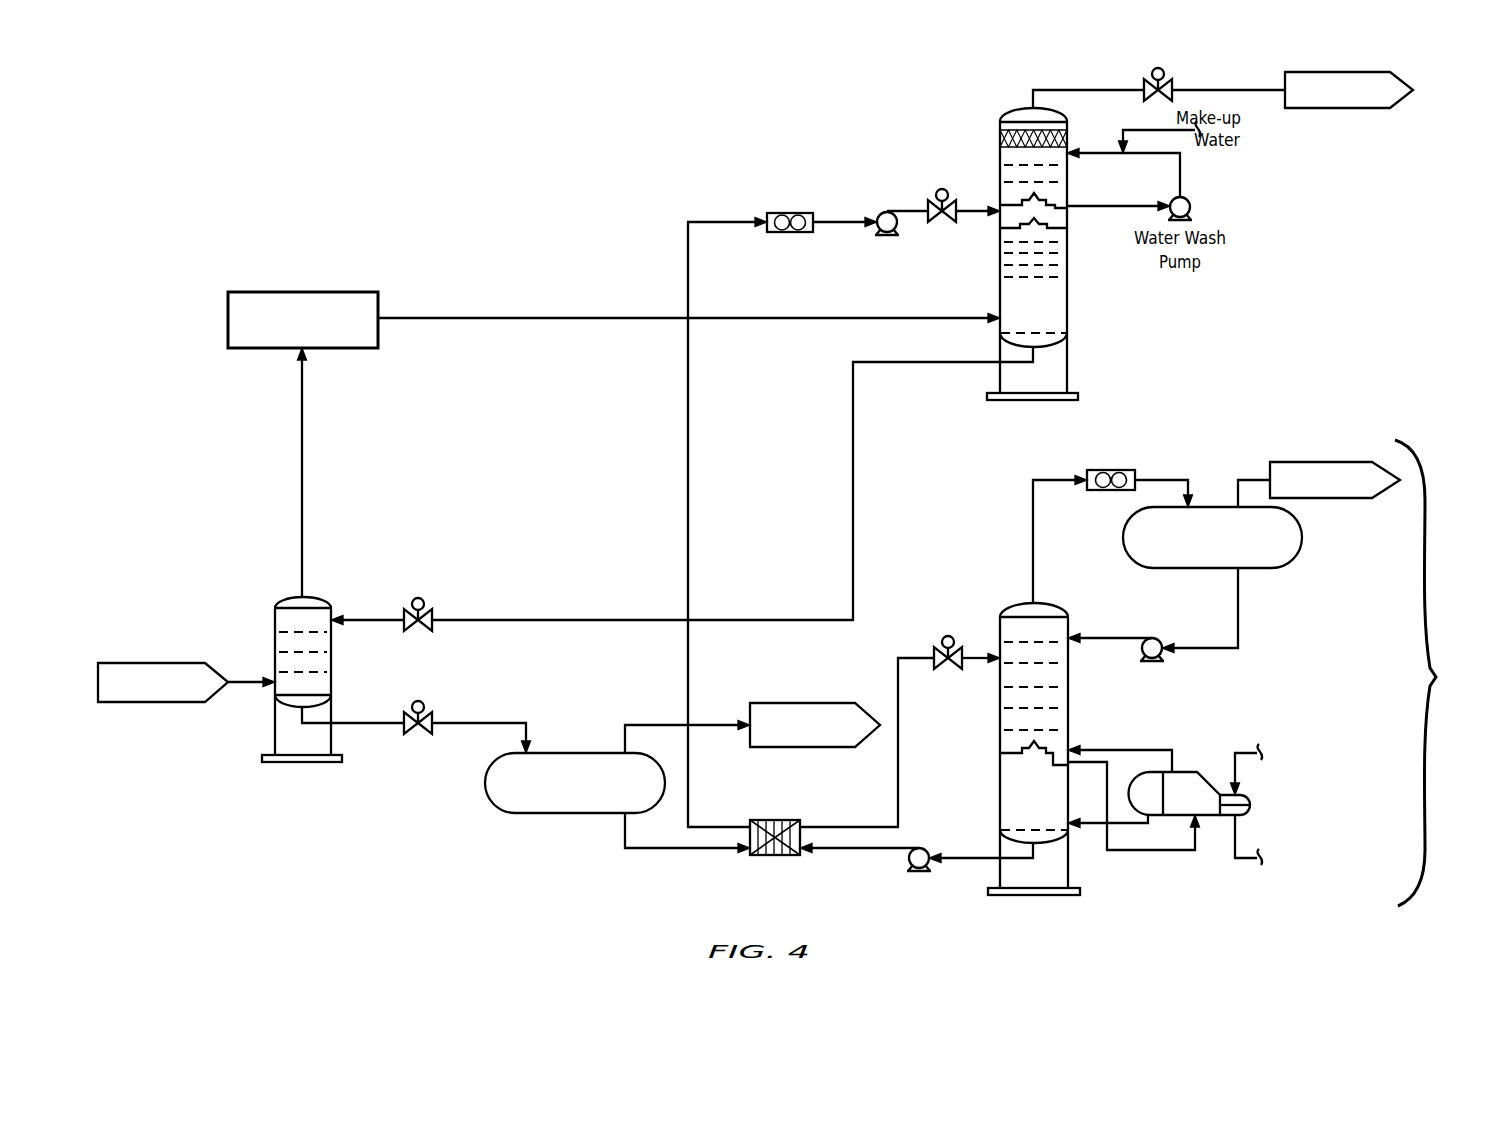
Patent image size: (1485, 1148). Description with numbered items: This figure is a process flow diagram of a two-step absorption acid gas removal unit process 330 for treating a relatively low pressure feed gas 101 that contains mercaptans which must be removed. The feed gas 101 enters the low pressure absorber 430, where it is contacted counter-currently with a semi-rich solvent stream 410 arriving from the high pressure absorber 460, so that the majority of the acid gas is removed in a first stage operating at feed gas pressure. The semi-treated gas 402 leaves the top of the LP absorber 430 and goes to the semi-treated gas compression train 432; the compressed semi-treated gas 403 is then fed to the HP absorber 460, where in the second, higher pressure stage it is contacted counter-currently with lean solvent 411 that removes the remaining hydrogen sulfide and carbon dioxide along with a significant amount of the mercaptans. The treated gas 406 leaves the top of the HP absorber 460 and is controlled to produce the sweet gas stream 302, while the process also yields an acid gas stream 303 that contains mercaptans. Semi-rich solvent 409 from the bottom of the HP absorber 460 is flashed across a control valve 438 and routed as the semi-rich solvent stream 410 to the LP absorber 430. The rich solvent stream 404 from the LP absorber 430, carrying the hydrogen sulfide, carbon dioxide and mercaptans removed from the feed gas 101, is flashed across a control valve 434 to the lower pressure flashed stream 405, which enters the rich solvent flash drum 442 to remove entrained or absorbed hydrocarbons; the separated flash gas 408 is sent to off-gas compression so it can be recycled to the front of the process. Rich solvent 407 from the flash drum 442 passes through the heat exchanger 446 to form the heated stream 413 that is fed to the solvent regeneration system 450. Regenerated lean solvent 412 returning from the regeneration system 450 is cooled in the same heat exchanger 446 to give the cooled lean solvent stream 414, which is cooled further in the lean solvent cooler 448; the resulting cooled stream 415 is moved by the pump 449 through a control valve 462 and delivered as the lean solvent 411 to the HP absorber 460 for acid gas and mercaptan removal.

The feed gas 101 is at (243, 684).
The sweet gas stream 302 is at (1232, 88).
The acid gas stream 303 is at (1254, 480).
The acid gas removal unit 330 is at (470, 205).
The semi-treated gas 402 is at (302, 467).
The compressed semi-treated gas 403 is at (802, 319).
The rich solvent stream 404 is at (368, 723).
The flashed stream 405 is at (476, 723).
The treated gas 406 is at (1086, 90).
The rich solvent 407 is at (645, 850).
The flash gas 408 is at (655, 724).
The semi-rich solvent 409 is at (853, 485).
The semi-rich solvent stream 410 is at (369, 620).
The lean solvent 411 is at (966, 211).
The regenerated lean solvent stream 412 is at (883, 848).
The heated stream 413 is at (899, 738).
The cooled lean solvent stream 414 is at (688, 463).
The cooled stream 415 is at (830, 223).
The LP Absorber 430 is at (283, 598).
The Semi-Treated Gas Compression Train 432 is at (352, 348).
The control valve 434 is at (425, 737).
The control valve 438 is at (421, 597).
The Rich Solvent Flash Drum 442 is at (485, 800).
The heat exchanger 446 is at (784, 820).
The Lean Solvent Cooler 448 is at (775, 233).
The pump 449 is at (877, 211).
The solvent regeneration system 450 is at (1136, 671).
The HP Absorber 460 is at (1068, 300).
The control valve 462 is at (940, 224).